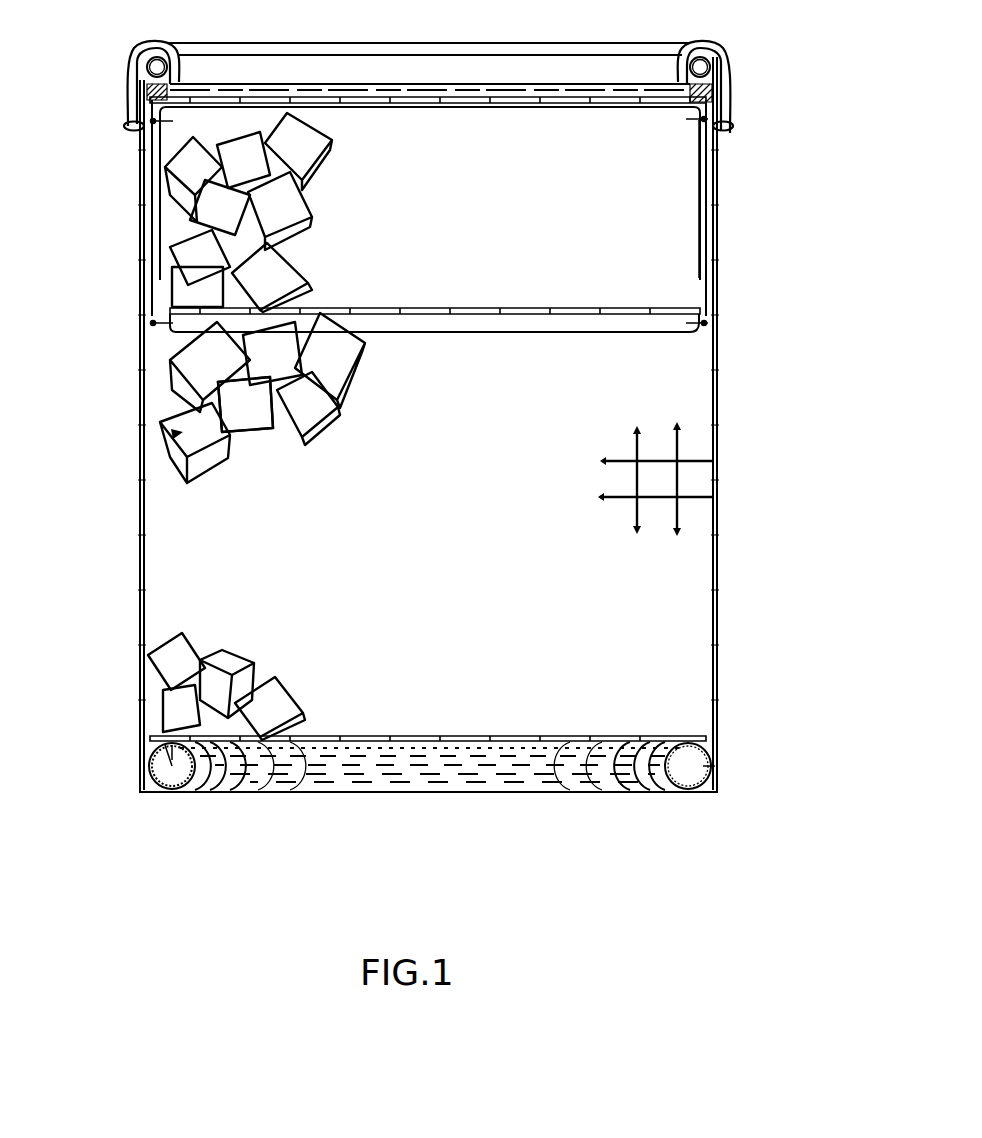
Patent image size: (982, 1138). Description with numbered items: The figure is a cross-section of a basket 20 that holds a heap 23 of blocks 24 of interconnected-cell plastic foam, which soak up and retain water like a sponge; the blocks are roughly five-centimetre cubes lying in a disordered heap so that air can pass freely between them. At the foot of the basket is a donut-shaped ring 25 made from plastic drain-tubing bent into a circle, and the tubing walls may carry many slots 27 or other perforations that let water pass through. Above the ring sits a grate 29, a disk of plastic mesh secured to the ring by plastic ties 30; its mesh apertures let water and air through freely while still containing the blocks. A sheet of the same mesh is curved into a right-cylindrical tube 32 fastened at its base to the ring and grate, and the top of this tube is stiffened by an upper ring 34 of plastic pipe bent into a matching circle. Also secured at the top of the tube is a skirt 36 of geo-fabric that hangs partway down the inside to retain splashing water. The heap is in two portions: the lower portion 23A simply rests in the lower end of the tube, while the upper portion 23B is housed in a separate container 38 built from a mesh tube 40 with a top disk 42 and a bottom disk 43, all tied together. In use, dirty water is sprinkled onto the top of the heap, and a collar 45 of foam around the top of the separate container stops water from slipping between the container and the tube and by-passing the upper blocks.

The basket 20 is at (752, 478).
The heap 23 is at (188, 519).
The lower portion of the heap 23A is at (160, 442).
The upper portion of the heap 23B is at (192, 163).
The blocks 24 is at (245, 448).
The ring 25 is at (377, 780).
The slots 27 is at (495, 770).
The grate 29 is at (505, 736).
The plastic ties 30 is at (687, 750).
The tube 32 is at (720, 582).
The ring 34 is at (250, 68).
The skirt 36 is at (710, 262).
The container 38 is at (650, 204).
The tube 40 is at (697, 278).
The top disk 42 is at (505, 102).
The bottom disk 43 is at (550, 302).
The collar 45 is at (690, 88).